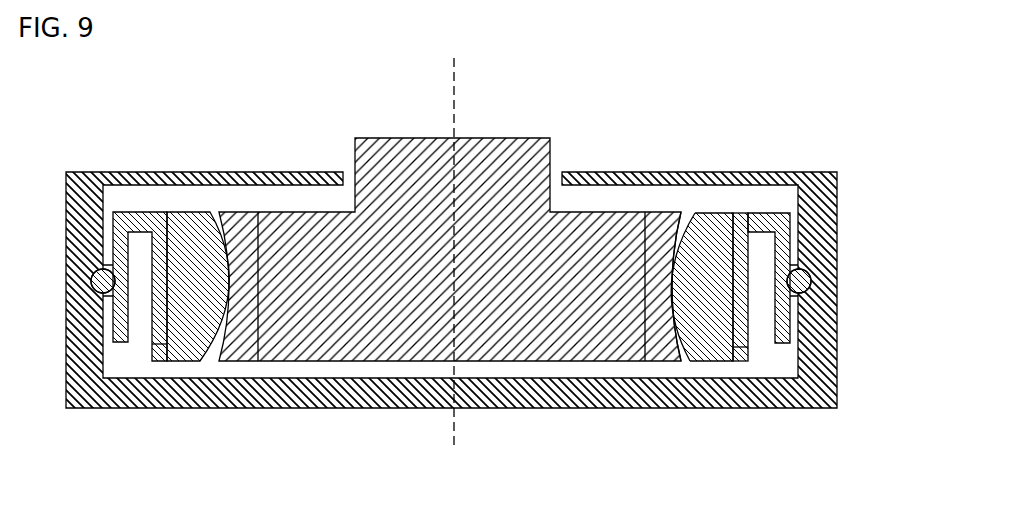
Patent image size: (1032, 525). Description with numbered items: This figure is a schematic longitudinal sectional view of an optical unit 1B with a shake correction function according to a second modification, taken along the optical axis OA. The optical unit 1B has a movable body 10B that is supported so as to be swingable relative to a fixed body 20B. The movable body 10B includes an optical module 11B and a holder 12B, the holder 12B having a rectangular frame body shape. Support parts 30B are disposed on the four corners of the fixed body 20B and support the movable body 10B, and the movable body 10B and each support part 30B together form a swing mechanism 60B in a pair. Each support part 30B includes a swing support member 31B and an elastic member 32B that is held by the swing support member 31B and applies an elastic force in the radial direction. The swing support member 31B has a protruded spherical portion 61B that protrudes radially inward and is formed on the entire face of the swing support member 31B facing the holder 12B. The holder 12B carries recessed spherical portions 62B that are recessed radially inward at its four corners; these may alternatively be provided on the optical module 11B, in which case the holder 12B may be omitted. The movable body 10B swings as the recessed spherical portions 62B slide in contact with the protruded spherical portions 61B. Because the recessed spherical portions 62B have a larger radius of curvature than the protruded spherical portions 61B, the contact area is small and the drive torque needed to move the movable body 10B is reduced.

The optical unit with a shake correction function 1B is at (823, 127).
The movable body 10B is at (450, 275).
The optical module 11B is at (417, 172).
The holder 12B is at (666, 338).
The fixed body 20B is at (847, 263).
The support part 30B is at (778, 300).
The swing support member 31B is at (690, 237).
The elastic member 32B is at (757, 218).
The swing mechanism 60B is at (699, 297).
The protruded spherical portion 61B is at (692, 345).
The recessed spherical portion 62B is at (684, 340).
The optical axis OA is at (453, 78).